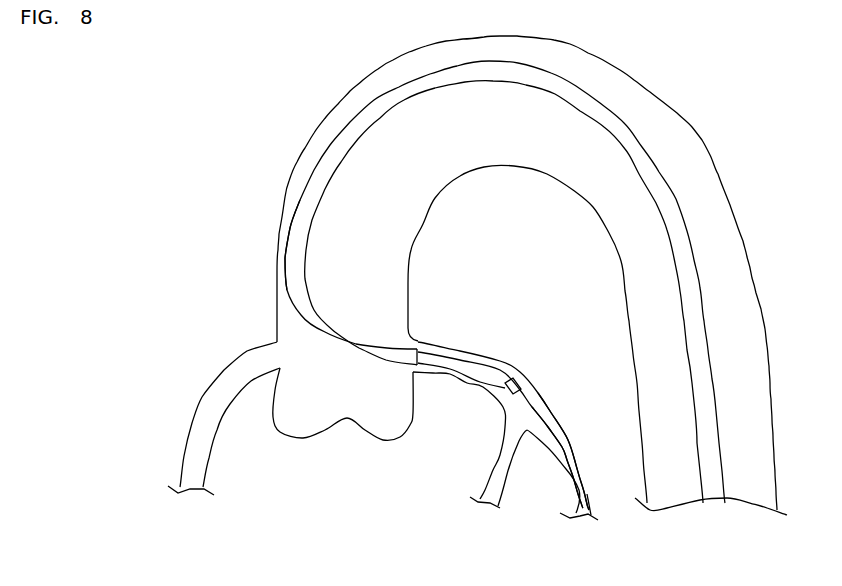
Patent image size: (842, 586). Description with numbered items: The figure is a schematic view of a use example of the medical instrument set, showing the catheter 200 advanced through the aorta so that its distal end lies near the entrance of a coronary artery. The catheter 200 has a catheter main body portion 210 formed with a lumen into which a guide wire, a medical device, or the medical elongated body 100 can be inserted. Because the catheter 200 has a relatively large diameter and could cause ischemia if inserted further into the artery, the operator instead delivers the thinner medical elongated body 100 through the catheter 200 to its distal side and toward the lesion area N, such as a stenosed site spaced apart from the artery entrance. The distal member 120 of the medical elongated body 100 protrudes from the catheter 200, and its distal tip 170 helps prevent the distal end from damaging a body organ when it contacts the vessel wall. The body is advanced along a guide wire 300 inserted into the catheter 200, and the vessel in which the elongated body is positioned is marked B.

The catheter 200 is at (320, 146).
The catheter main body portion 210 is at (282, 243).
The medical elongated body 100 is at (500, 360).
The distal member 120 is at (450, 358).
The distal tip 170 is at (520, 382).
The guide wire 300 is at (545, 420).
The blood vessel B is at (546, 447).
The lesion area N is at (565, 483).